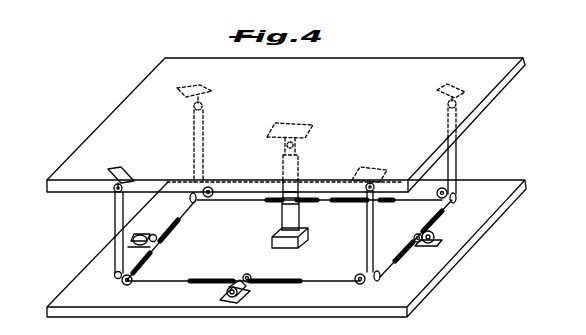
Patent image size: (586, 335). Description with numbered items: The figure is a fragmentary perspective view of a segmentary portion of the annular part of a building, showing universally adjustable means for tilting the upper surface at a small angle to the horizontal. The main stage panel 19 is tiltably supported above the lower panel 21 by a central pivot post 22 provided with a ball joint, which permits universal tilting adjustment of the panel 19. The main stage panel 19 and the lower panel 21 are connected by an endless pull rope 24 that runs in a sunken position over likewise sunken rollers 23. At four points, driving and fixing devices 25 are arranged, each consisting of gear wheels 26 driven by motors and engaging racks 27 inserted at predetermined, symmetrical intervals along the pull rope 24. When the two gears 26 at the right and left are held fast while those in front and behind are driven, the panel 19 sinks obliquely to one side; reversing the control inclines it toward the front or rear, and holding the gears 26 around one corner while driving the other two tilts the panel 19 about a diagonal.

The main stage panel 19 is at (497, 93).
The lower panel 21 is at (426, 285).
The central pivot post 22 is at (284, 211).
The sunken rollers 23 is at (125, 283).
The endless pull rope 24 is at (114, 221).
The driving and fixing devices 25 is at (135, 233).
The gear wheels 26 is at (156, 242).
The racks 27 is at (190, 281).